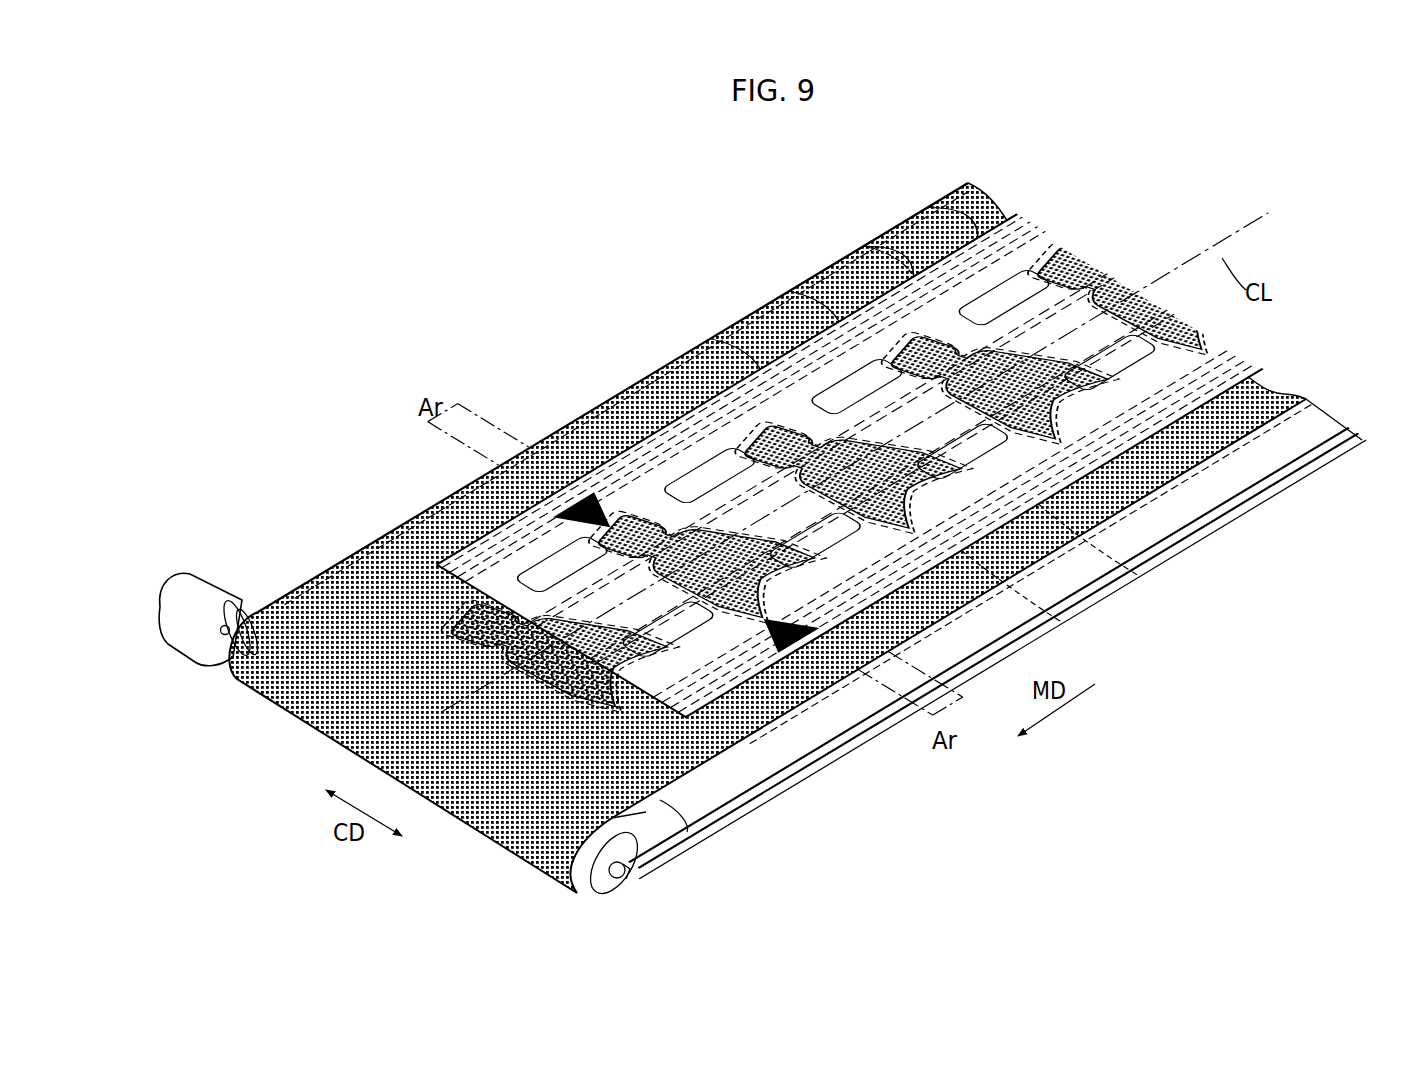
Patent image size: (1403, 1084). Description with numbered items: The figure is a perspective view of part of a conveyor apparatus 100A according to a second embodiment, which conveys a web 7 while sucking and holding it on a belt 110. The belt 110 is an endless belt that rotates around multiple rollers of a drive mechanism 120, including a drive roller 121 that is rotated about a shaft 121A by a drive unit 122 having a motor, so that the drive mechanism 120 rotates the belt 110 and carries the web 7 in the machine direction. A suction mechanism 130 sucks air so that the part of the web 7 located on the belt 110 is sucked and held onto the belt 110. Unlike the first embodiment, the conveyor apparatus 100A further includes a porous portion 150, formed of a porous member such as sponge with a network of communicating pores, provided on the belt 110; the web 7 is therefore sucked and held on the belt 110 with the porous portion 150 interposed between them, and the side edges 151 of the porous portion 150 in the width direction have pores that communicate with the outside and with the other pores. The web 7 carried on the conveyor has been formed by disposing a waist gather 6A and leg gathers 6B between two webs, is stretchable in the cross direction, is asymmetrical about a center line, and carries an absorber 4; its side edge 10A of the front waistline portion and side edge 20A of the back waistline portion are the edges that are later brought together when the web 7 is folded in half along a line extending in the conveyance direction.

The conveyor apparatus 100A is at (578, 236).
The belt 110 is at (412, 520).
The side edge of the front waistline portion 10A is at (1168, 520).
The side edge of the back waistline portion 20A is at (926, 232).
The web 7 is at (710, 352).
The absorber 4 is at (793, 300).
The waist gather 6A is at (870, 262).
The leg gathers 6B is at (1046, 625).
The suction mechanism 130 is at (820, 772).
The porous portion 150 is at (582, 864).
The side edges of the porous portion 151 is at (684, 815).
The drive roller 121 is at (622, 886).
The drive mechanism 120 is at (224, 564).
The drive unit 122 is at (201, 588).
The shaft 121A is at (233, 622).